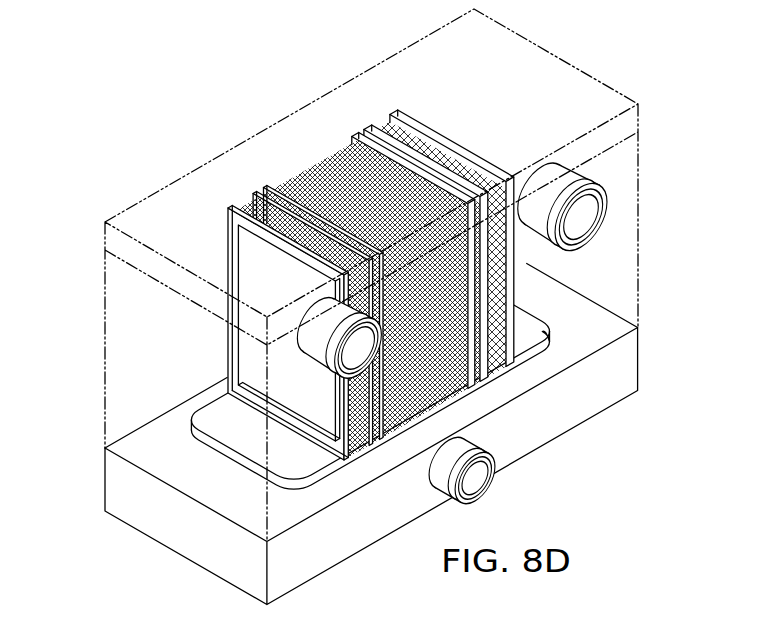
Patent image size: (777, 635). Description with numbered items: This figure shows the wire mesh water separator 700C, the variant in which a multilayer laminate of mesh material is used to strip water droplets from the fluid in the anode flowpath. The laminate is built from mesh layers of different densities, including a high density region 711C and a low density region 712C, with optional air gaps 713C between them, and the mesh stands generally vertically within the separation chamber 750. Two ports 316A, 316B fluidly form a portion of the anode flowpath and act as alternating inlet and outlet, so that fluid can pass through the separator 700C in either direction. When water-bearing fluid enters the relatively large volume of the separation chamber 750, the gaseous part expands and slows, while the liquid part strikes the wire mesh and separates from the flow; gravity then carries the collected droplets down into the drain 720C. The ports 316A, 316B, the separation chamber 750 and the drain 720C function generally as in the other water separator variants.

The wire mesh water separator 700C is at (206, 123).
The high density region 711C is at (316, 174).
The low density region 712C is at (430, 147).
The air gaps 713C is at (369, 136).
The port 316A is at (614, 207).
The port 316B is at (350, 383).
The drain 720C is at (474, 483).
The separation chamber 750 is at (104, 313).